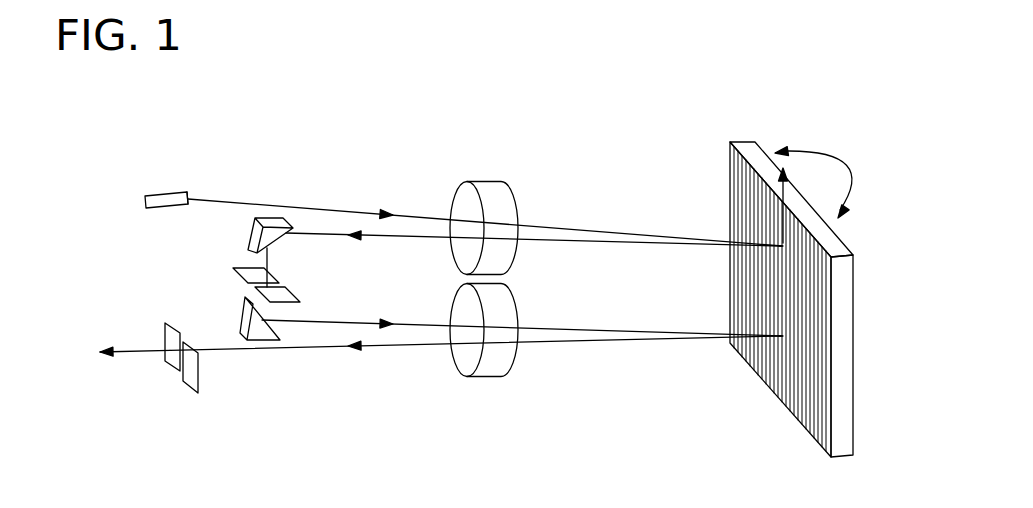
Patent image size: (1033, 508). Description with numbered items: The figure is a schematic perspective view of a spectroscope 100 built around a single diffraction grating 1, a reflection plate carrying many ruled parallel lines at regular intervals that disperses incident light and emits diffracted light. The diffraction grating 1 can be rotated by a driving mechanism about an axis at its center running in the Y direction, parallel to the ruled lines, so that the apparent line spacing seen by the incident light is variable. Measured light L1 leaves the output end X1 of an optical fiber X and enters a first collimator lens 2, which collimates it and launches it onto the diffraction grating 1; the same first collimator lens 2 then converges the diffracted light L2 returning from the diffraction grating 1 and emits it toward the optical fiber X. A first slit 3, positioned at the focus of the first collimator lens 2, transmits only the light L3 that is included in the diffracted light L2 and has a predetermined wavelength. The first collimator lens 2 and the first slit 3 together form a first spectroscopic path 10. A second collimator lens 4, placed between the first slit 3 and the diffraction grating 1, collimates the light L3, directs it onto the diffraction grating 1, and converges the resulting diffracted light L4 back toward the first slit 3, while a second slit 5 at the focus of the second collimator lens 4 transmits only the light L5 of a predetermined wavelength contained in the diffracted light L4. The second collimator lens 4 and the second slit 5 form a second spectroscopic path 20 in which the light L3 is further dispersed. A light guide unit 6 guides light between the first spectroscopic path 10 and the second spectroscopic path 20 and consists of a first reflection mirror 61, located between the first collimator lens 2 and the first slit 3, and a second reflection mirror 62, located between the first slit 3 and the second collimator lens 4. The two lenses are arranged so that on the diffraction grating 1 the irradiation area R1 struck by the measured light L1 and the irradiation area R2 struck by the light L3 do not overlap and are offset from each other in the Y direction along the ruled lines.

The spectroscope 100 is at (811, 241).
The diffraction grating 1 is at (845, 325).
The first collimator lens 2 is at (487, 181).
The first slit 3 is at (308, 282).
The second collimator lens 4 is at (487, 378).
The second slit 5 is at (163, 381).
The light guide unit 6 is at (220, 279).
The first reflection mirror 61 is at (253, 227).
The second reflection mirror 62 is at (231, 304).
The first spectroscopic path 10 is at (145, 187).
The second spectroscopic path 20 is at (103, 374).
The optical fiber X is at (158, 194).
The output end X1 is at (191, 200).
The Y direction Y is at (813, 195).
The measured light L1 is at (555, 228).
The diffracted light L2 is at (553, 242).
The light of predetermined wavelength L3 is at (607, 330).
The diffracted light L4 is at (594, 342).
The light of predetermined wavelength L5 is at (127, 350).
The irradiation area R1 is at (783, 247).
The irradiation area R2 is at (783, 337).